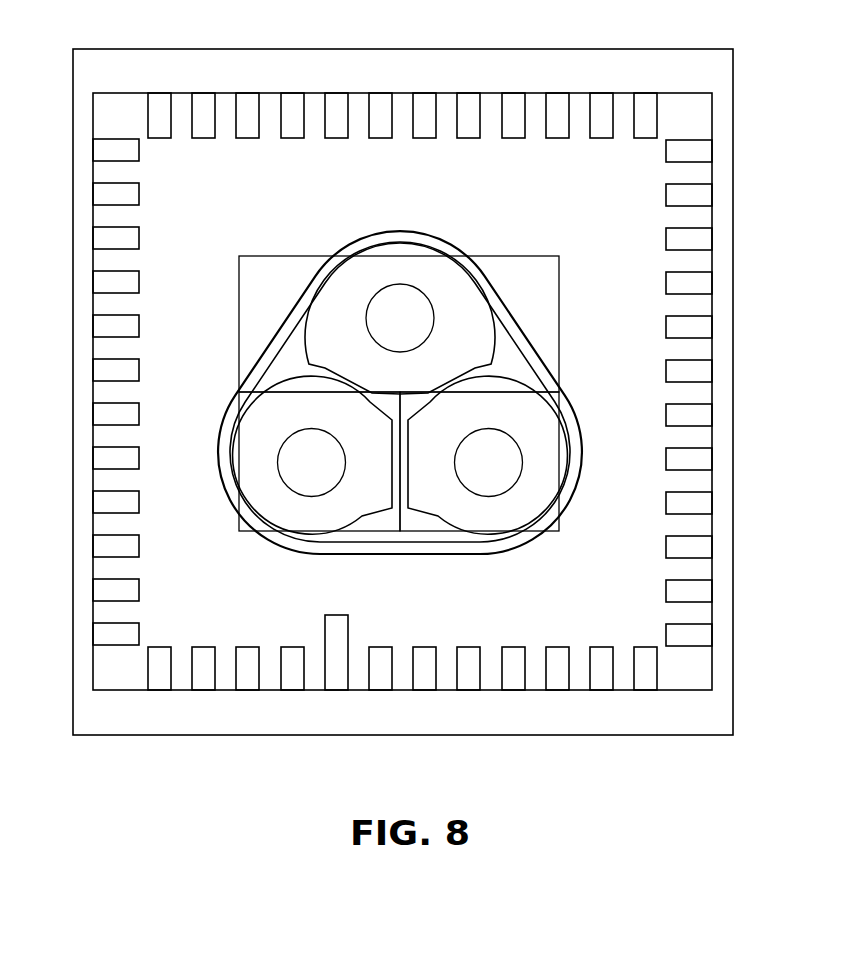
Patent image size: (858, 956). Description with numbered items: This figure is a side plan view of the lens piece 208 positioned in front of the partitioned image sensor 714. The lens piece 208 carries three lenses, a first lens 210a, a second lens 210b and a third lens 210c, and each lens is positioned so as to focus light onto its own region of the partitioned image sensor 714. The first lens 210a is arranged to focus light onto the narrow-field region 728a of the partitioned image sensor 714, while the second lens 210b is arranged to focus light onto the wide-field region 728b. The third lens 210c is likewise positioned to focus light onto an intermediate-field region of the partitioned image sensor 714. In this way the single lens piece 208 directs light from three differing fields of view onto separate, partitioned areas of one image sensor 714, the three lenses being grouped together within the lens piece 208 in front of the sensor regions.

The lens piece 208 is at (414, 231).
The first lens 210a is at (310, 475).
The second lens 210b is at (402, 306).
The third lens 210c is at (490, 473).
The partitioned image sensor 714 is at (733, 537).
The narrow-field region 728a is at (280, 503).
The wide-field region 728b is at (537, 268).